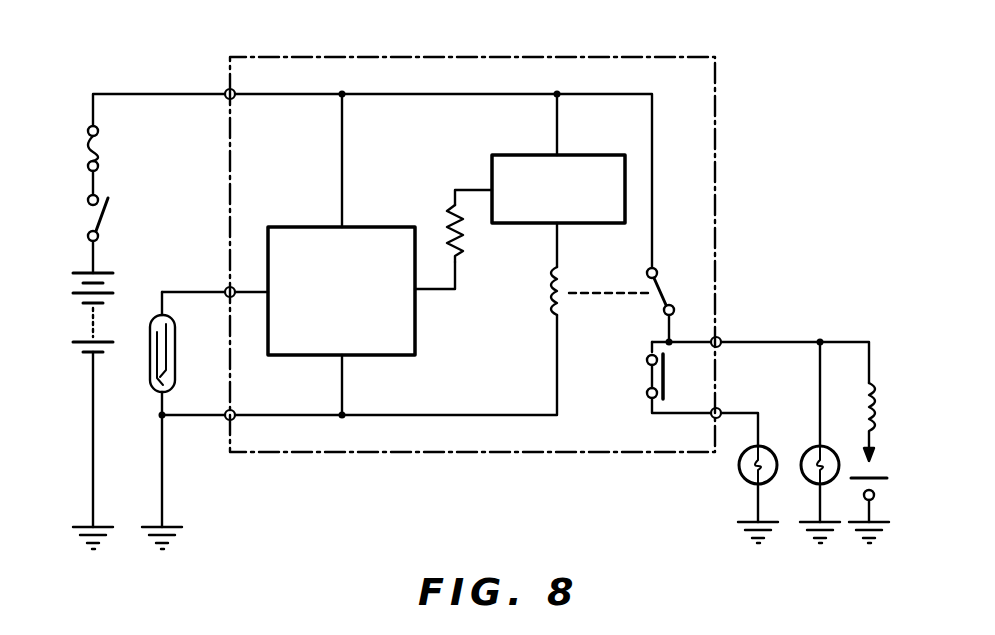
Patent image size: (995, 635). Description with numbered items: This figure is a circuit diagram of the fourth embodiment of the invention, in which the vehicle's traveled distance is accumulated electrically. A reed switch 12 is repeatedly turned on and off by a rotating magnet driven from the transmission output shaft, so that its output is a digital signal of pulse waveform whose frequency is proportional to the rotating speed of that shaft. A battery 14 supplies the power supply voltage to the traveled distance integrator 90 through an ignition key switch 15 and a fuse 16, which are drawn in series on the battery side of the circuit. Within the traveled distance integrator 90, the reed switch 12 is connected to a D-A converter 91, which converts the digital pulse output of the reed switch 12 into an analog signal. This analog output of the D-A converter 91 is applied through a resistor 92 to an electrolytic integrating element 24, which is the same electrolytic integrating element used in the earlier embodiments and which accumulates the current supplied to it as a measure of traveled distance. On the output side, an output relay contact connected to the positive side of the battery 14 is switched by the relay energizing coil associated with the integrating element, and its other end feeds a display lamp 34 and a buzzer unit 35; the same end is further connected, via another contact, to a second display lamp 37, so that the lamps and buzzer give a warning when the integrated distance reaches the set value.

The traveled distance integrator 90 is at (612, 57).
The fuse 16 is at (98, 140).
The ignition key switch 15 is at (106, 216).
The battery 14 is at (110, 285).
The reed switch 12 is at (176, 345).
The D-A converter 91 is at (415, 330).
The resistor 92 is at (463, 243).
The electrolytic integrating element 24 is at (523, 155).
The display lamp 37 is at (740, 473).
The display lamp 34 is at (806, 456).
The buzzer unit 35 is at (862, 405).